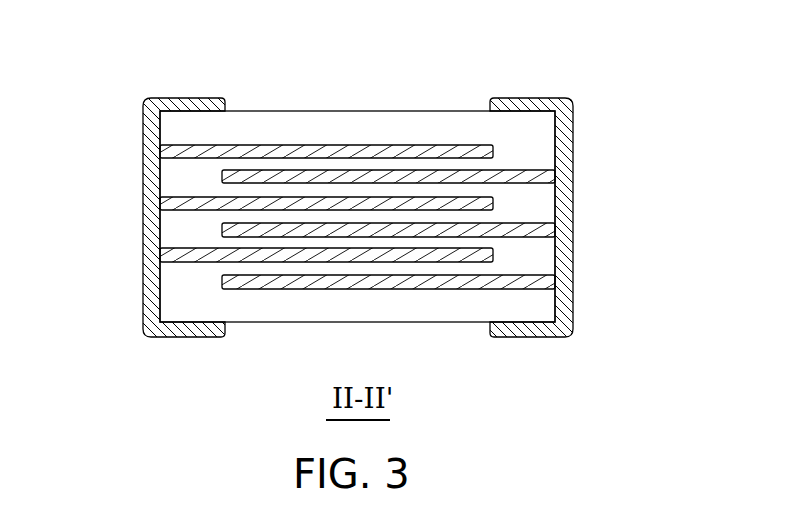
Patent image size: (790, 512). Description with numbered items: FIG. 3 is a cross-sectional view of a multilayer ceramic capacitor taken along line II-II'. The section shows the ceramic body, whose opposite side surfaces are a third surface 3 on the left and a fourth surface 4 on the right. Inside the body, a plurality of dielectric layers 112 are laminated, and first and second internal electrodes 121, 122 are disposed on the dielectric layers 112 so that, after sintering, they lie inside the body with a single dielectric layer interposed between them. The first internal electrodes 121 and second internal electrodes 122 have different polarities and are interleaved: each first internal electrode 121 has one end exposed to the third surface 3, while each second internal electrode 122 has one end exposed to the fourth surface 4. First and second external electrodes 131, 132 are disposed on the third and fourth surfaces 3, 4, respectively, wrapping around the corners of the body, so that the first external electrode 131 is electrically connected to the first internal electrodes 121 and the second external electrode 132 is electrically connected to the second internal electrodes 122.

The third surface 3 is at (130, 271).
The fourth surface 4 is at (588, 150).
The dielectric layer 112 is at (472, 213).
The first internal electrode 121 is at (197, 198).
The second internal electrode 122 is at (535, 233).
The first external electrode 131 is at (188, 97).
The second external electrode 132 is at (528, 97).